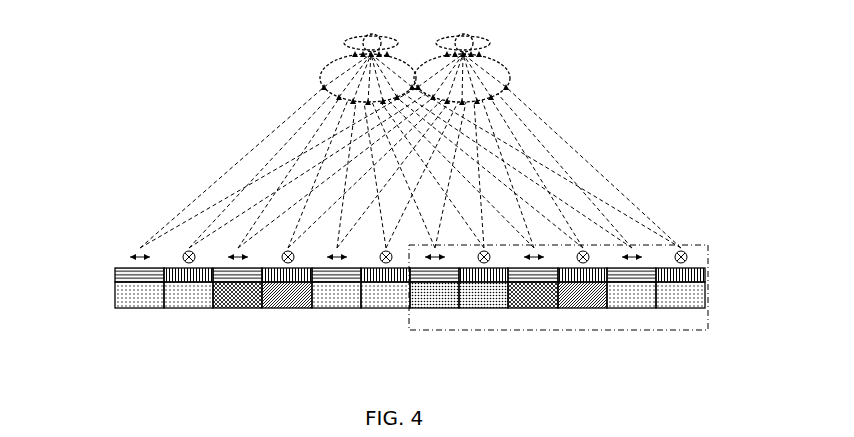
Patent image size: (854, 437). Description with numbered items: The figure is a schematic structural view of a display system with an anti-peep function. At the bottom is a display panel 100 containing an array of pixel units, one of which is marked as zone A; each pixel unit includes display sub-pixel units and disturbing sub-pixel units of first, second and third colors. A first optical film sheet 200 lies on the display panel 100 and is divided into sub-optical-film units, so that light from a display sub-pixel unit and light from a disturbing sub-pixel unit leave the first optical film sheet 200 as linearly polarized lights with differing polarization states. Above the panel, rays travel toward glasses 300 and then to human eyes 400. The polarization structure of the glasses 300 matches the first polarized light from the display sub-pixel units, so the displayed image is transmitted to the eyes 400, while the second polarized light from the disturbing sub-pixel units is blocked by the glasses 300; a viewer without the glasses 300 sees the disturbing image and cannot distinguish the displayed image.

The human eyes 400 is at (482, 43).
The glasses 300 is at (506, 78).
The first optical film sheet 200 is at (396, 239).
The display panel 100 is at (406, 315).
The zone A is at (710, 326).